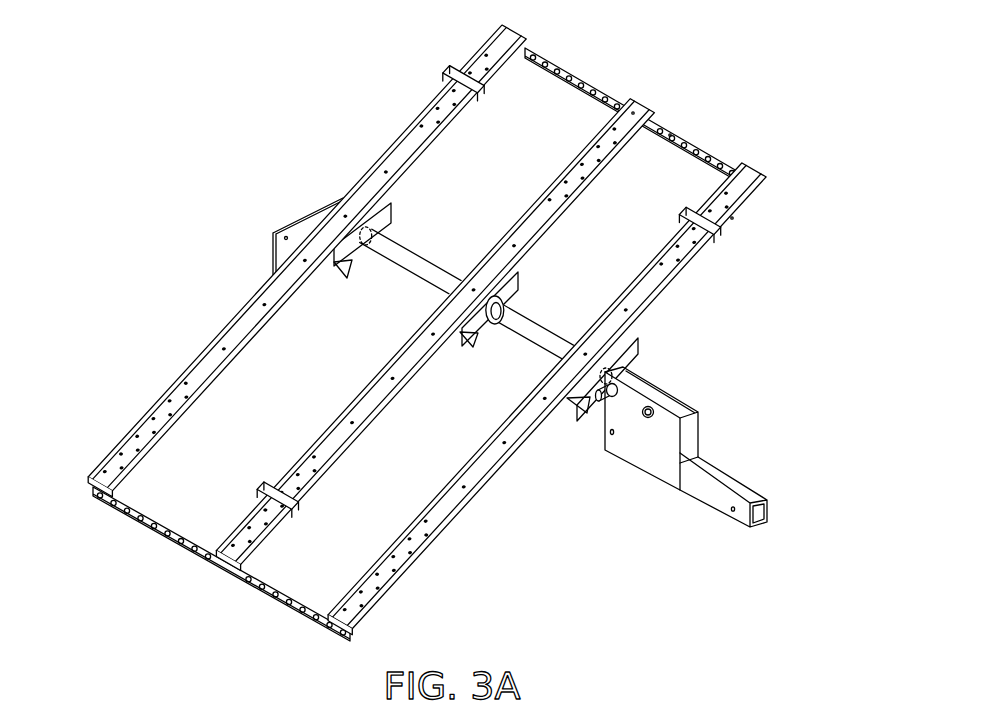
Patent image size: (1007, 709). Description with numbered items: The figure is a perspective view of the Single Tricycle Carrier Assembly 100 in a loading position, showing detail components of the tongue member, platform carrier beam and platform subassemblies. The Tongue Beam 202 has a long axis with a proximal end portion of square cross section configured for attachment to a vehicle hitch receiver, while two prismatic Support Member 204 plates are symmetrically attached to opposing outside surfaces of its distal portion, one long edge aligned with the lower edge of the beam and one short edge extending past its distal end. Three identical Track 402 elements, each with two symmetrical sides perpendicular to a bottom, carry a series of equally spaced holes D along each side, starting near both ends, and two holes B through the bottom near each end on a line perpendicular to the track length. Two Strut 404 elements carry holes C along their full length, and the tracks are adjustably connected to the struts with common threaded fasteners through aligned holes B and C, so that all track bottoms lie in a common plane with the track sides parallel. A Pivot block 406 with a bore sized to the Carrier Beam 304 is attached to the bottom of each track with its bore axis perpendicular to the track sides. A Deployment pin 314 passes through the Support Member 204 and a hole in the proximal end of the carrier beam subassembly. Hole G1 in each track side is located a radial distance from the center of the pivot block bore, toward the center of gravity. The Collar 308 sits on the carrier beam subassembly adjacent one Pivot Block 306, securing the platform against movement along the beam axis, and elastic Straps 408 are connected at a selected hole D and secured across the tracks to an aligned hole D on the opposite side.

The Single Tricycle Carrier Assembly 100 is at (448, 333).
The Tongue Beam 202 is at (771, 490).
The Support Member 204 is at (671, 454).
The Carrier Beam 304 is at (434, 293).
The Pivot Block 306 is at (271, 233).
The Collar 308 is at (456, 348).
The Deployment pin 314 is at (591, 429).
The Track 402 is at (427, 330).
The Strut 404 is at (395, 344).
The Pivot block 406 is at (546, 307).
The Strap 408 is at (469, 320).
The holes B is at (677, 97).
The holes C is at (709, 123).
The holes D is at (776, 213).
The Hole G1 is at (222, 283).